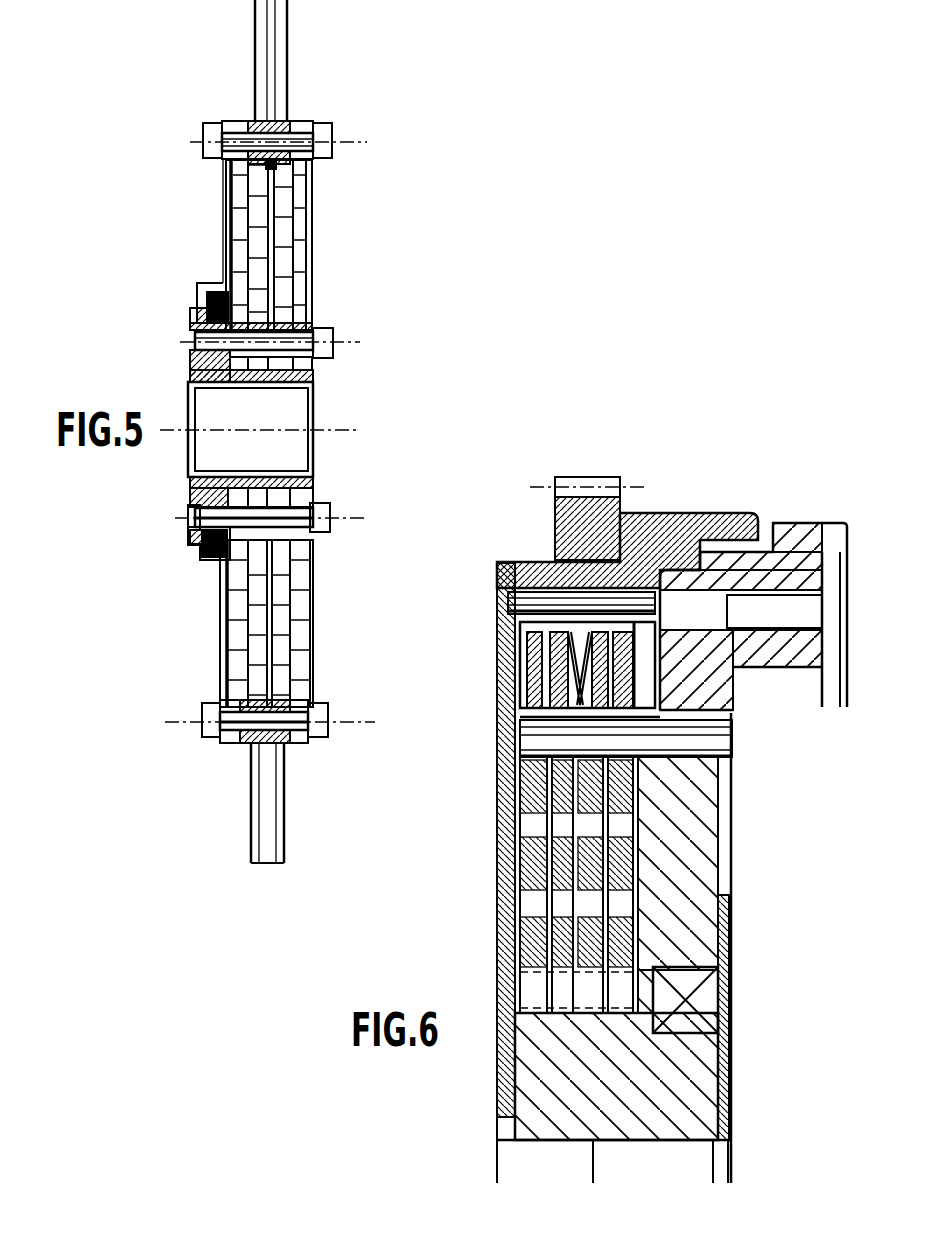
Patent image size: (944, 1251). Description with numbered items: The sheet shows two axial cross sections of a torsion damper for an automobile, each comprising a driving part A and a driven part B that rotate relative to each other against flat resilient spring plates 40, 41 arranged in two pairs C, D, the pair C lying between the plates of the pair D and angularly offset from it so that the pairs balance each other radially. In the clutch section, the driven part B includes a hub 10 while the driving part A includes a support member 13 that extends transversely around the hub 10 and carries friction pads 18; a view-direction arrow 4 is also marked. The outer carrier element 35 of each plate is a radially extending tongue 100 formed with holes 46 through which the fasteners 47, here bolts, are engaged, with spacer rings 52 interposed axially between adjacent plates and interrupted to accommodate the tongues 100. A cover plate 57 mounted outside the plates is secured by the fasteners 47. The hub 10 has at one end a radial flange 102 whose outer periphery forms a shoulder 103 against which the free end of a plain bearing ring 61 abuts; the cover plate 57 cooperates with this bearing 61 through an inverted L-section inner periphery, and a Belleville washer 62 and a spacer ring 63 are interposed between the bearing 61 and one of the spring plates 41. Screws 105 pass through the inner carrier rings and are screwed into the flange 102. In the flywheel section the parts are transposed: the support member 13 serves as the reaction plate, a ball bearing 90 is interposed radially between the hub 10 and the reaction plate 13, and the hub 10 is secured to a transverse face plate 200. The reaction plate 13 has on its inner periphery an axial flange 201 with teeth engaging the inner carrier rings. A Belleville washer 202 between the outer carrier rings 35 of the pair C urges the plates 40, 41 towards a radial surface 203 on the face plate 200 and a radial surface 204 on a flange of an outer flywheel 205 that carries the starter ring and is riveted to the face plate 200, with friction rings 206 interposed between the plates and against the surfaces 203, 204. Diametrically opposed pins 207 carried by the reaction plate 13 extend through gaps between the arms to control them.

In FIG. 5, the viewing direction arrow 4 is at (425, 286).
In FIG. 5, the hub 10 is at (322, 380).
In FIG. 6, the hub 10 is at (561, 1150).
In FIG. 5, the support member 13 is at (283, 692).
In FIG. 6, the support member 13 is at (745, 845).
In FIG. 5, the friction pads 18 is at (257, 32).
In FIG. 6, the outer carrier ring 35 is at (537, 643).
In FIG. 5, the spring plate 40 is at (280, 747).
In FIG. 5, the spring plate 41 is at (237, 119).
In FIG. 5, the holes 46 is at (300, 723).
In FIG. 5, the fasteners 47 is at (352, 122).
In FIG. 5, the spacer rings 52 is at (257, 119).
In FIG. 5, the cover plate 57 is at (220, 673).
In FIG. 5, the plain bearing ring 61 is at (210, 287).
In FIG. 5, the axially acting resilient element 62 is at (220, 573).
In FIG. 5, the spacer ring 63 is at (220, 587).
In FIG. 6, the ball bearing 90 is at (727, 1003).
In FIG. 5, the tongue 100 is at (250, 745).
In FIG. 5, the radial flange 102 is at (190, 368).
In FIG. 5, the shoulder 103 is at (217, 560).
In FIG. 5, the screws 105 is at (330, 510).
In FIG. 6, the transverse face plate 200 is at (505, 877).
In FIG. 6, the axial flange 201 is at (690, 938).
In FIG. 6, the axially acting resilient element 202 is at (557, 560).
In FIG. 6, the radial surface 203 is at (520, 688).
In FIG. 6, the radial surface 204 is at (633, 690).
In FIG. 6, the outer flywheel 205 is at (720, 523).
In FIG. 6, the friction rings 206 is at (633, 625).
In FIG. 6, the pins 207 is at (540, 723).
In FIG. 6, the driving part A is at (755, 897).
In FIG. 6, the driven part B is at (655, 1150).
In FIG. 5, the pair of spring plates C is at (303, 112).
In FIG. 5, the pair of spring plates D is at (326, 114).